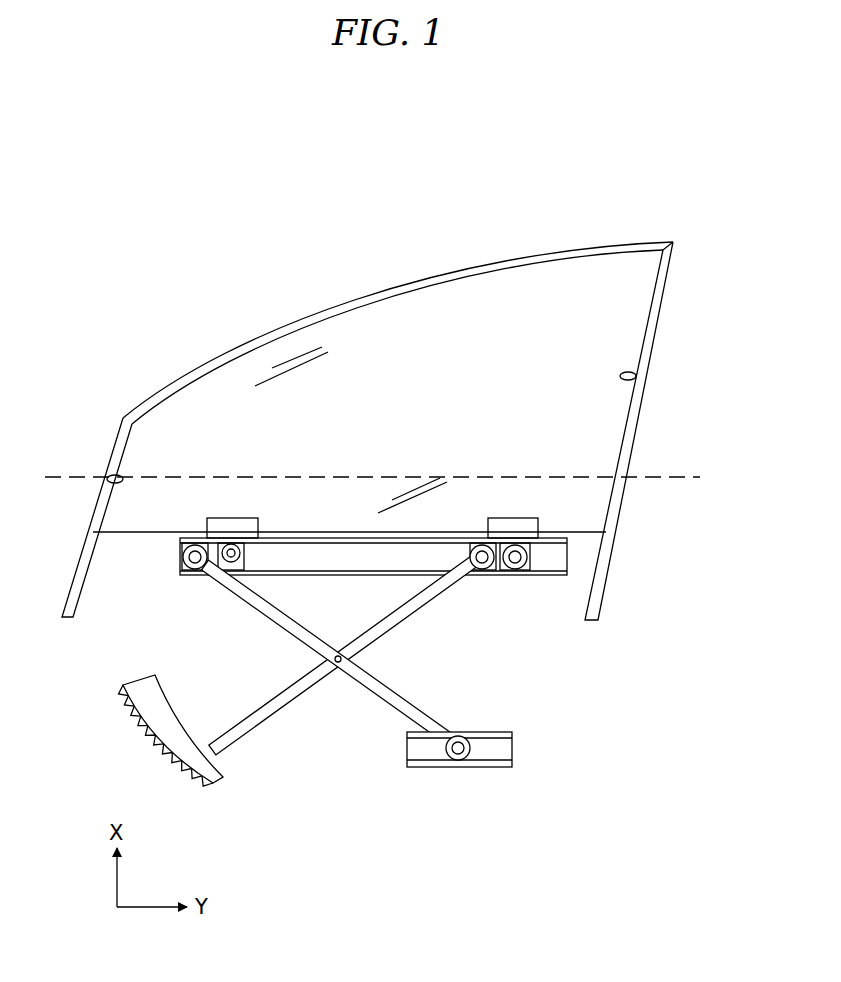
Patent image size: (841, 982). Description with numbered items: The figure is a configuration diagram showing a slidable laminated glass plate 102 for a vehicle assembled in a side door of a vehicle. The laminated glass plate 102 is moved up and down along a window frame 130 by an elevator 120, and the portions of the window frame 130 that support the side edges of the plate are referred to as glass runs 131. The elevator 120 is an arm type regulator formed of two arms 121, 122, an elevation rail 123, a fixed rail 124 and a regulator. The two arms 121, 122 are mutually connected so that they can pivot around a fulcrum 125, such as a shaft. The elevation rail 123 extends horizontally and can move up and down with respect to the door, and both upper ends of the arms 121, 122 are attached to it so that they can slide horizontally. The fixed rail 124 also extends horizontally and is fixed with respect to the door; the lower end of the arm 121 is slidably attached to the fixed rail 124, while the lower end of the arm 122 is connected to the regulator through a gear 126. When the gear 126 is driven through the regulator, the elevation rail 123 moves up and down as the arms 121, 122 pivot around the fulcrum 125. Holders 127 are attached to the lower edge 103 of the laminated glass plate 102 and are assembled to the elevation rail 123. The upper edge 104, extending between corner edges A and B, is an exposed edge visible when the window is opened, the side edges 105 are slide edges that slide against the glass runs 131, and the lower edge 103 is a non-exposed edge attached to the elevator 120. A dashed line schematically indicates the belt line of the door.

The laminated glass plate 102 is at (595, 428).
The lower edge 103 is at (144, 533).
The upper edge 104 is at (353, 300).
The side edges 105 is at (636, 376).
The elevator 120 is at (548, 670).
The arm 121 is at (388, 690).
The arm 122 is at (265, 698).
The elevation rail 123 is at (552, 560).
The fixed rail 124 is at (512, 748).
The fulcrum 125 is at (338, 655).
The gear 126 is at (162, 748).
The holders 127 is at (214, 568).
The window frame 130 is at (173, 373).
The glass runs 131 is at (112, 443).